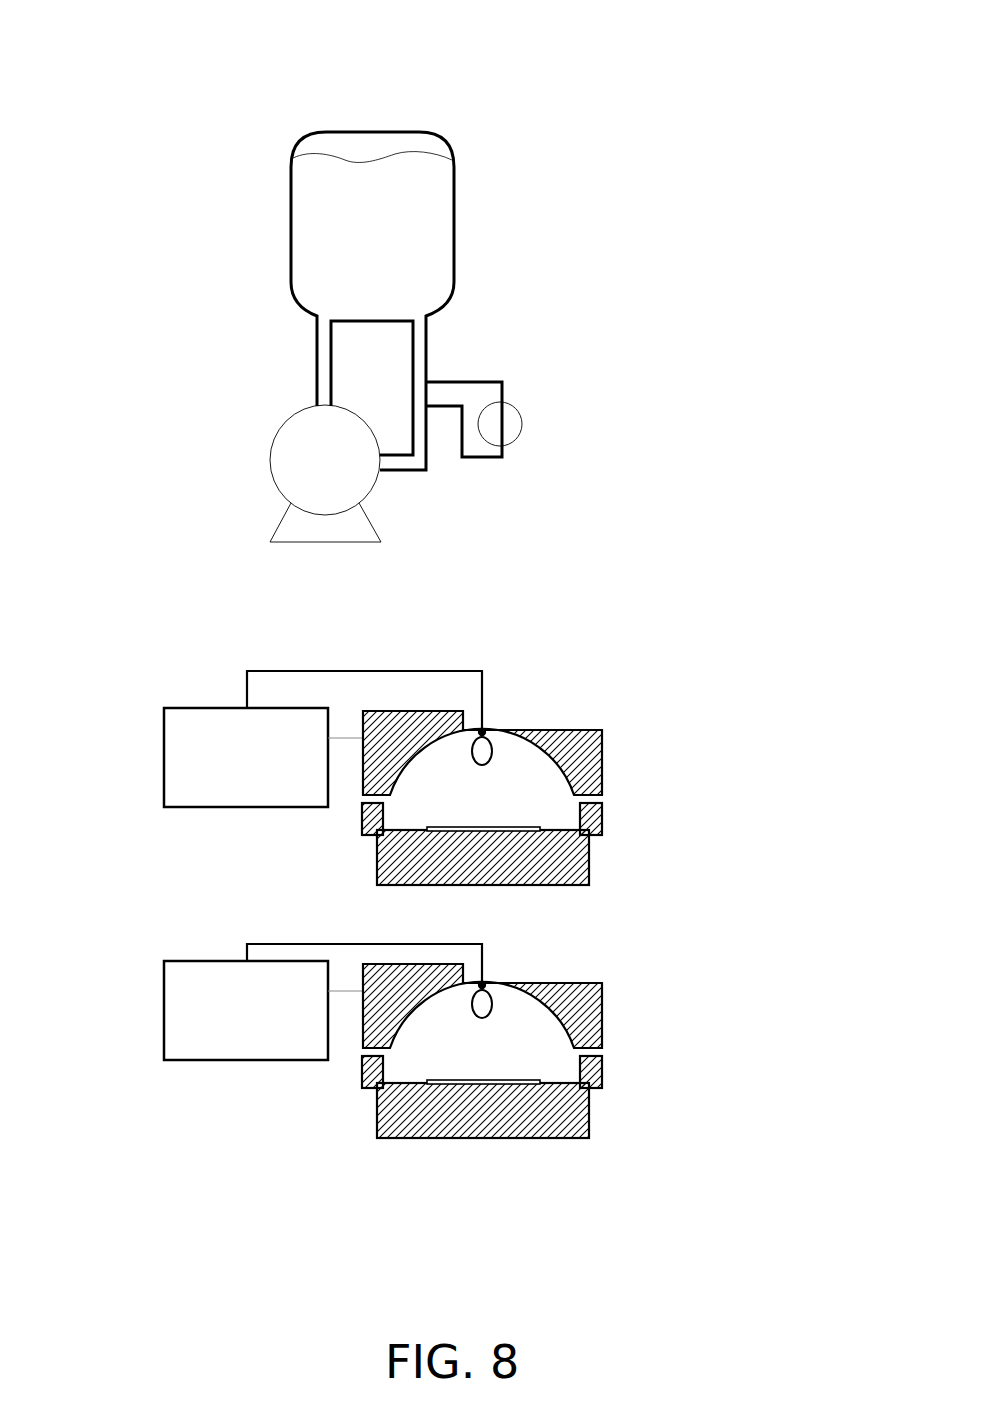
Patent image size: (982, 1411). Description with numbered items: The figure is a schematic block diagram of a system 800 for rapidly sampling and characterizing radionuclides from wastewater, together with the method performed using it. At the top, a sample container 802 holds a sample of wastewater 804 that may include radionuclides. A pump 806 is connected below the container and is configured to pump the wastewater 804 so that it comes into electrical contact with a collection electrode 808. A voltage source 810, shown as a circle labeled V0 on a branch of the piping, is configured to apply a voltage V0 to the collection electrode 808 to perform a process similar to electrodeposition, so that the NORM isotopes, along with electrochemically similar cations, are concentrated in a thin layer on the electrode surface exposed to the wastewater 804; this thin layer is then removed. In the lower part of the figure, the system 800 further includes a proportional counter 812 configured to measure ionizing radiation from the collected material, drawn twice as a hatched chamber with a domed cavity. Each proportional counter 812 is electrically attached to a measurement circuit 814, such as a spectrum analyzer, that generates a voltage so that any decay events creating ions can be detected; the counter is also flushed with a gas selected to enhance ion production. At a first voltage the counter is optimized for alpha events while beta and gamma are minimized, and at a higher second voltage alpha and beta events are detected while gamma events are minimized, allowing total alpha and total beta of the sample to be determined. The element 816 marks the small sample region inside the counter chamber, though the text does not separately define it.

The system 800 is at (110, 60).
The sample container 802 is at (291, 212).
The wastewater 804 is at (342, 262).
The pump 806 is at (272, 474).
The collection electrode 808 is at (428, 381).
The voltage source 810 is at (523, 425).
The proportional counter 812 is at (613, 750).
The measurement circuit 814 is at (164, 755).
The resin droplet at inlet 816 is at (482, 751).